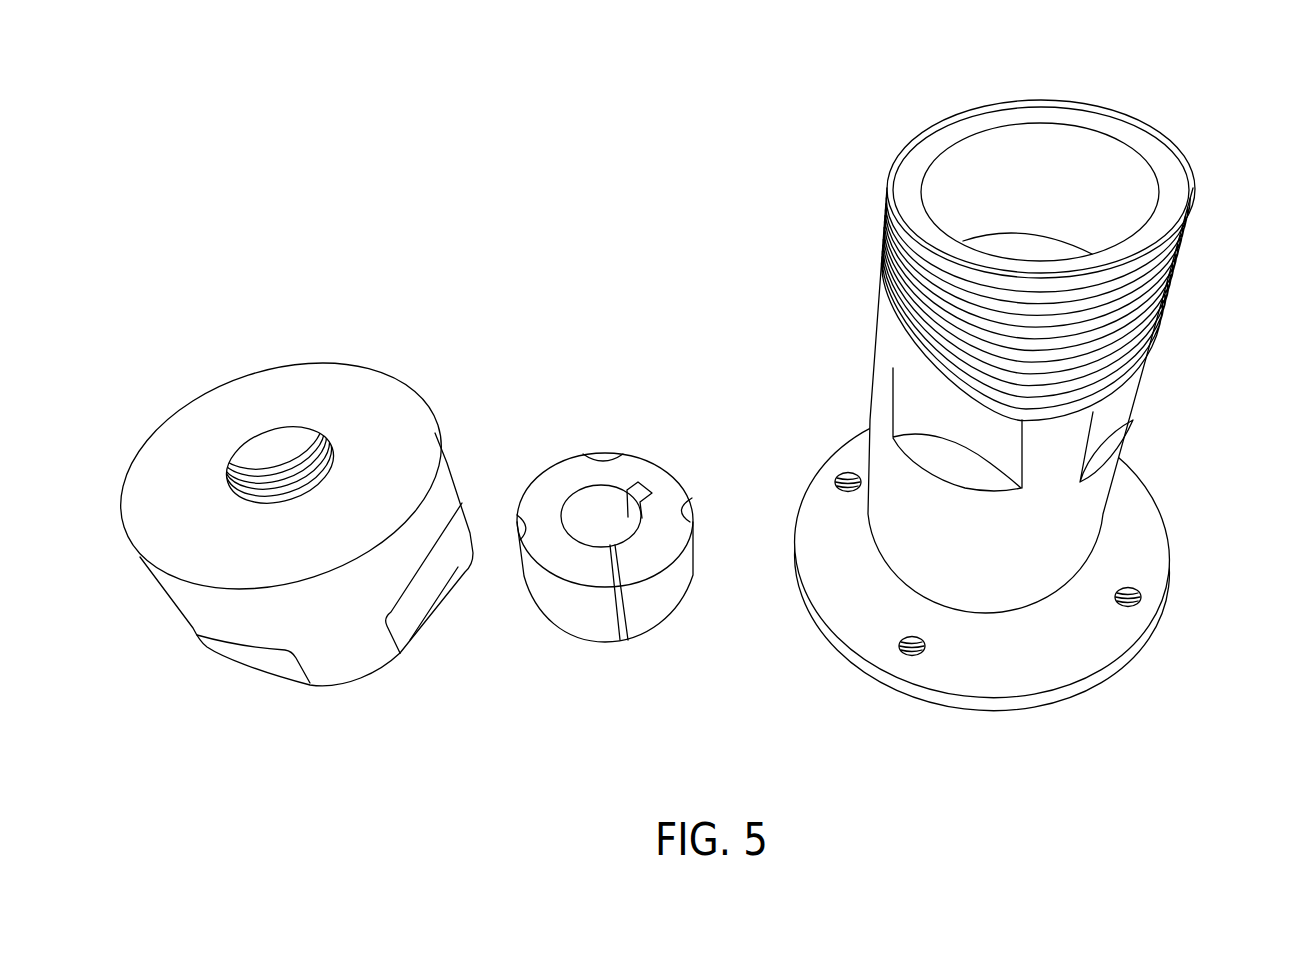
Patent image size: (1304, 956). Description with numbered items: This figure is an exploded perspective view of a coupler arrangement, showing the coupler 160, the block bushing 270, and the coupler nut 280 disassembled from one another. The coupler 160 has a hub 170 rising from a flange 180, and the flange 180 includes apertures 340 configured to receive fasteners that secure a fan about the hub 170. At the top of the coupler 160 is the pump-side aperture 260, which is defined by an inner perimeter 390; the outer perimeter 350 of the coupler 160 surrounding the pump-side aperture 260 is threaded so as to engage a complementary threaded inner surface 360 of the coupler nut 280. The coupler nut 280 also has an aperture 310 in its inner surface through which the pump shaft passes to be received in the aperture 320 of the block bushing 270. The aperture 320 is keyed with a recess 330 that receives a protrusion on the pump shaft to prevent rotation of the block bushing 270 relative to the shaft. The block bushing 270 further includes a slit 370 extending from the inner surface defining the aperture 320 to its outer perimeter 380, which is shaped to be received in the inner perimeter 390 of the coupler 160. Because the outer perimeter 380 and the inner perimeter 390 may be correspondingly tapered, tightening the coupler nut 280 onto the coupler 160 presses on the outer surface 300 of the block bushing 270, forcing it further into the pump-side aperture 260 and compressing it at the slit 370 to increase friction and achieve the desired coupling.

The coupler 160 is at (1210, 118).
The hub 170 is at (1033, 585).
The flange 180 is at (993, 672).
The pump-side aperture 260 is at (1038, 162).
The block bushing 270 is at (675, 385).
The coupler nut 280 is at (441, 335).
The outer surface 300 is at (581, 467).
The aperture 310 is at (335, 434).
The aperture 320 is at (585, 527).
The recess 330 is at (650, 479).
The apertures 340 is at (846, 472).
The outer perimeter 350 is at (1172, 300).
The threaded inner surface 360 is at (263, 480).
The slit 370 is at (626, 556).
The outer perimeter 380 is at (696, 553).
The inner perimeter 390 is at (943, 167).